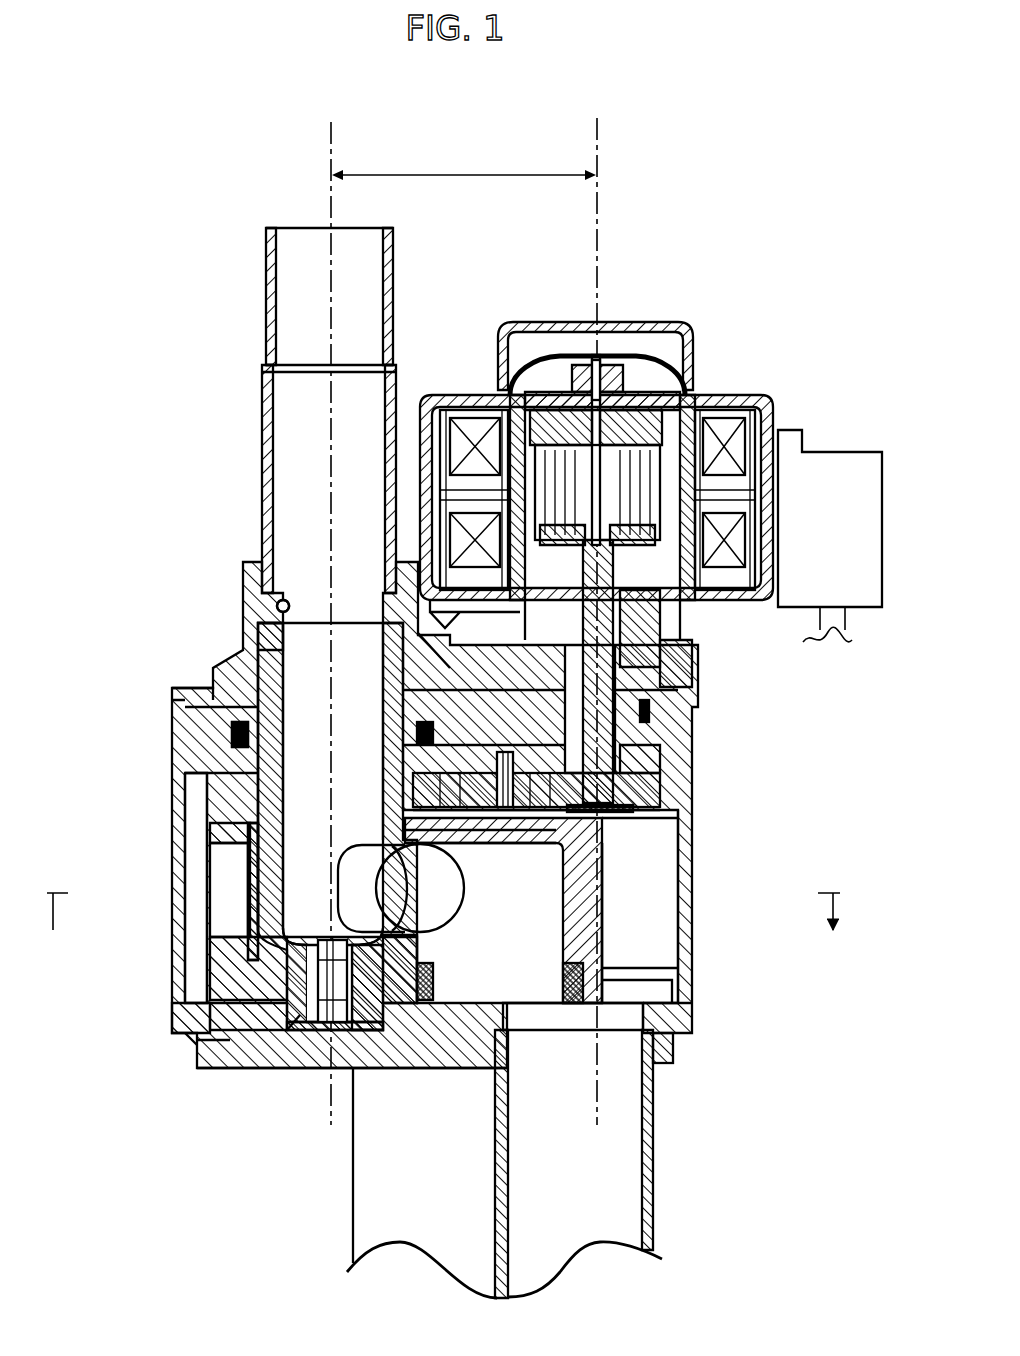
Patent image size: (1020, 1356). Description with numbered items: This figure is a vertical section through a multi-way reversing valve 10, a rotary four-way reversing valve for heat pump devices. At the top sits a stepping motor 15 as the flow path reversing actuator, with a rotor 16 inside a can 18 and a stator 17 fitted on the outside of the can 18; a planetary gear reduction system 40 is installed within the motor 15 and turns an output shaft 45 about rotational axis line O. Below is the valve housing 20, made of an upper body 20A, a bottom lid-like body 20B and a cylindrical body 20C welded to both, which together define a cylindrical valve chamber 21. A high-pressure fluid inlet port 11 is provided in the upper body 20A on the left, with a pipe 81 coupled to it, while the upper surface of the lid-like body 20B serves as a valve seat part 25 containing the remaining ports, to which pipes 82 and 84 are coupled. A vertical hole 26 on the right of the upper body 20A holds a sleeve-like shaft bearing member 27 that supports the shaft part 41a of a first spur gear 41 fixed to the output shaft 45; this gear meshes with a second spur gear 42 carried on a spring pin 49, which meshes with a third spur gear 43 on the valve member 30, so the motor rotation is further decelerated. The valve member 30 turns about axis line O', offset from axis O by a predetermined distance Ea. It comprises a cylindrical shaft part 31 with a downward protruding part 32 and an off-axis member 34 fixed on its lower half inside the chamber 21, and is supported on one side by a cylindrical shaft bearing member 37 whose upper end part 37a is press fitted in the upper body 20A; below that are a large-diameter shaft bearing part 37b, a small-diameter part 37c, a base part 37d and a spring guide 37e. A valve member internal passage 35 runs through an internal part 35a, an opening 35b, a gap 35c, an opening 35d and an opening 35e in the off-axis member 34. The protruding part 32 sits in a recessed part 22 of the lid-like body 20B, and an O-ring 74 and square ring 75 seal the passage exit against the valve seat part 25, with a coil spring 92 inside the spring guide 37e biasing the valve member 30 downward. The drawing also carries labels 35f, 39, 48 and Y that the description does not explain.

The multi-way reversing valve 10 is at (185, 468).
The high-pressure fluid inlet port 11 is at (278, 612).
The stepping motor 15 is at (712, 388).
The rotor 16 is at (500, 395).
The stator 17 is at (780, 425).
The can 18 is at (648, 358).
The valve housing 20 is at (242, 582).
The upper body 20A is at (212, 688).
The bottom lid-like body 20B is at (205, 1070).
The cylindrical body 20C is at (192, 848).
The valve chamber 21 is at (645, 875).
The recessed part 22 is at (262, 1066).
The valve seat part 25 is at (692, 1012).
The vertical hole 26 is at (652, 718).
The shaft bearing member 27 is at (655, 690).
The valve member 30 is at (220, 858).
The cylindrical shaft part 31 is at (250, 905).
The downward protruding part 32 is at (378, 1066).
The off-axis member 34 is at (600, 892).
The valve member internal passage 35 is at (602, 962).
The internal part 35a is at (318, 705).
The opening 35b is at (350, 870).
The gap 35c is at (245, 880).
The opening 35d is at (405, 1003).
The opening 35e is at (540, 925).
The valve element cup 35f is at (703, 923).
The shaft bearing member 37 is at (205, 792).
The upper end part 37a is at (268, 655).
The shaft bearing part 37b is at (152, 790).
The small-diameter part 37c is at (258, 918).
The base part 37d is at (200, 1003).
The spring guide 37e is at (302, 1065).
The O-ring 39 is at (230, 745).
The planetary gear reduction system 40 is at (527, 403).
The first spur gear 41 is at (635, 797).
The shaft part 41a is at (652, 760).
The second spur gear 42 is at (545, 808).
The third spur gear 43 is at (440, 843).
The output shaft 45 is at (655, 612).
The thin plate 48 is at (607, 812).
The spring pin 49 is at (505, 785).
The O-ring 74 is at (590, 980).
The square ring 75 is at (660, 1030).
The pipe 81 is at (262, 470).
The pipe 82 is at (365, 1217).
The pipe 84 is at (653, 1148).
The coil spring 92 is at (353, 1072).
The rotational axis line O is at (596, 606).
The rotational axis line O' is at (327, 609).
The predetermined distance Ea is at (464, 161).
The section line Y is at (442, 929).